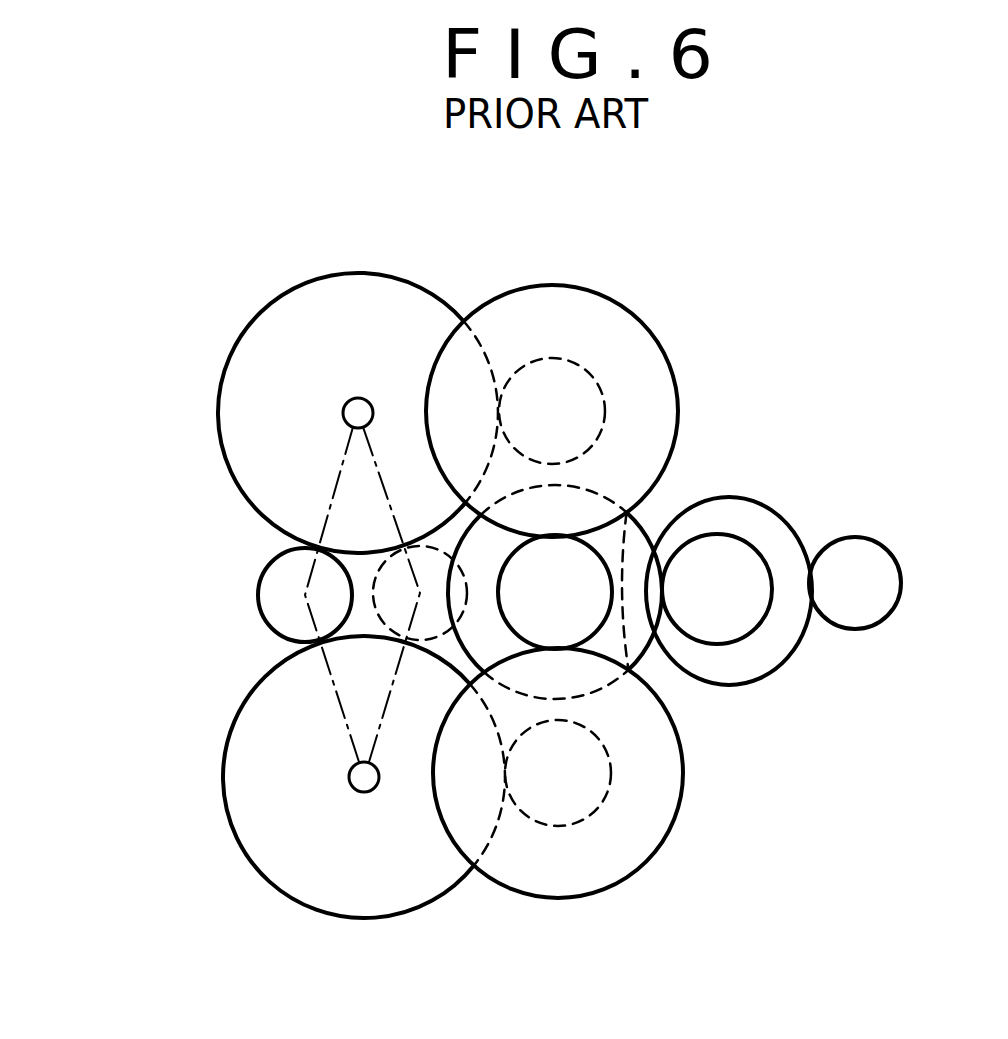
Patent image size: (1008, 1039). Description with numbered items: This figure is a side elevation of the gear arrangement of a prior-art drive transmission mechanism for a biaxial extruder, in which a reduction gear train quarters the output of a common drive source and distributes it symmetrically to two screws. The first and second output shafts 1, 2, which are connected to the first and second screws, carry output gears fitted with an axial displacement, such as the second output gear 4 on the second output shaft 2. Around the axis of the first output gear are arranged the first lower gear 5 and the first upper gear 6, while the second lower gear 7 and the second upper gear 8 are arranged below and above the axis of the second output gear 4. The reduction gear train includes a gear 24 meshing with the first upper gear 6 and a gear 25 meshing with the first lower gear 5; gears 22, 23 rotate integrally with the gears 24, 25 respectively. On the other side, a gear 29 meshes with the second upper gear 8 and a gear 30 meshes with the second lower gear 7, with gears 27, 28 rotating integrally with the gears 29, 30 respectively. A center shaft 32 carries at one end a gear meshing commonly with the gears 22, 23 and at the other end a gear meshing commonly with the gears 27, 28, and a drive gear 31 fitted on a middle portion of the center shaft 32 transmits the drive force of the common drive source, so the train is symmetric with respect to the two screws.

The first output shaft 1 is at (420, 592).
The second output shaft 2 is at (305, 595).
The second output gear 4 is at (265, 625).
The first lower gear 5 is at (222, 790).
The first upper gear 6 is at (224, 368).
The second lower gear 7 is at (273, 777).
The second upper gear 8 is at (270, 413).
The gear 22 is at (665, 348).
The gear 23 is at (683, 790).
The gear 24 is at (583, 367).
The gear 25 is at (602, 807).
The gear 27 is at (648, 408).
The gear 28 is at (657, 773).
The gear 29 is at (648, 333).
The gear 30 is at (680, 812).
The drive gear 31 is at (607, 685).
The center shaft 32 is at (600, 555).